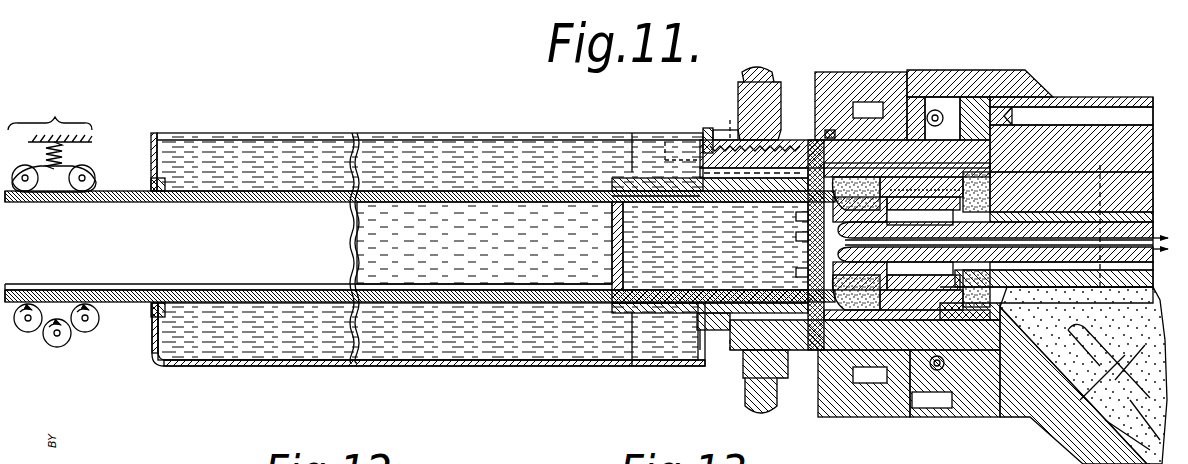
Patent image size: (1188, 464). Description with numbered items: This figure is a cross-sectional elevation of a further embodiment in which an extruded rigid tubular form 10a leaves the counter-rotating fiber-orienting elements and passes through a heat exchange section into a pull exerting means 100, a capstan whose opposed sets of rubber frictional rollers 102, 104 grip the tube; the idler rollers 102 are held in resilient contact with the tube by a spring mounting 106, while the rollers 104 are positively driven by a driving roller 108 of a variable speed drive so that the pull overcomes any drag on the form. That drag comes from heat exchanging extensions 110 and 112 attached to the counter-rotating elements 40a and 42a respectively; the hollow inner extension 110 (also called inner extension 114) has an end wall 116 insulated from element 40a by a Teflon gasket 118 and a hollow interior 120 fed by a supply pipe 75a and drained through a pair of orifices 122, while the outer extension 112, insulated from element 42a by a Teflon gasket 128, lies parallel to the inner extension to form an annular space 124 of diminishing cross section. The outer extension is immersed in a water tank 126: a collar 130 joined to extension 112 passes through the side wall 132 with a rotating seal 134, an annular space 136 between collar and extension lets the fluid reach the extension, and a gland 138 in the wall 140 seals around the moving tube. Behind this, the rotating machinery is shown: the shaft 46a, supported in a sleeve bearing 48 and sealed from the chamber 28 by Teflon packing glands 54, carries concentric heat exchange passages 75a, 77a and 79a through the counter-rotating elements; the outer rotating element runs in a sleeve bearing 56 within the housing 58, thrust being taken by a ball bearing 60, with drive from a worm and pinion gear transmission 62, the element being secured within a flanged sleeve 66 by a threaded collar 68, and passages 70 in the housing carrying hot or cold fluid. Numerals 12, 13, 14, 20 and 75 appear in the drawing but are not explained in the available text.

The extruded rigid tubular form 10a is at (118, 303).
The section line 12 is at (661, 118).
The section line 13 is at (740, 110).
The section line 14 is at (1112, 160).
The housing 20 is at (1102, 97).
The chamber 28 is at (988, 190).
The counter-rotating element 40a is at (995, 240).
The counter-rotating element 42a is at (850, 180).
The shaft 46a is at (1160, 235).
The sleeve bearing 48 is at (1025, 195).
The packing glands 54 is at (1004, 156).
The sleeve bearing 56 is at (830, 128).
The housing 58 is at (858, 74).
The ball bearing 60 is at (940, 108).
The worm and pinion gear transmission 62 is at (738, 90).
The flanged sleeve 66 is at (978, 110).
The threaded collar 68 is at (713, 133).
The passages 70 is at (882, 102).
The rod 75 is at (1150, 245).
The supply pipe 75a is at (796, 236).
The concentric heat exchange passage 77a is at (1140, 270).
The concentric heat exchange passage 79a is at (1122, 214).
The pull exerting means 100 is at (50, 116).
The frictional rollers 102 is at (26, 165).
The frictional rollers 104 is at (25, 332).
The spring mounting 106 is at (66, 156).
The driving roller 108 is at (58, 348).
The inner heat exchanging extension 110 is at (604, 201).
The outer heat exchanging extension 112 is at (680, 179).
The inner extension 114 is at (612, 248).
The end wall 116 is at (796, 272).
The gasket 118 is at (796, 216).
The hollow interior 120 is at (676, 248).
The orifices 122 is at (608, 212).
The annular space 124 is at (612, 186).
The tank 126 is at (490, 366).
The Teflon gasket 128 is at (845, 154).
The collar 130 is at (665, 142).
The side wall 132 is at (705, 128).
The rotating seal 134 is at (705, 350).
The annular space 136 is at (812, 142).
The gland 138 is at (153, 318).
The wall 140 is at (195, 140).